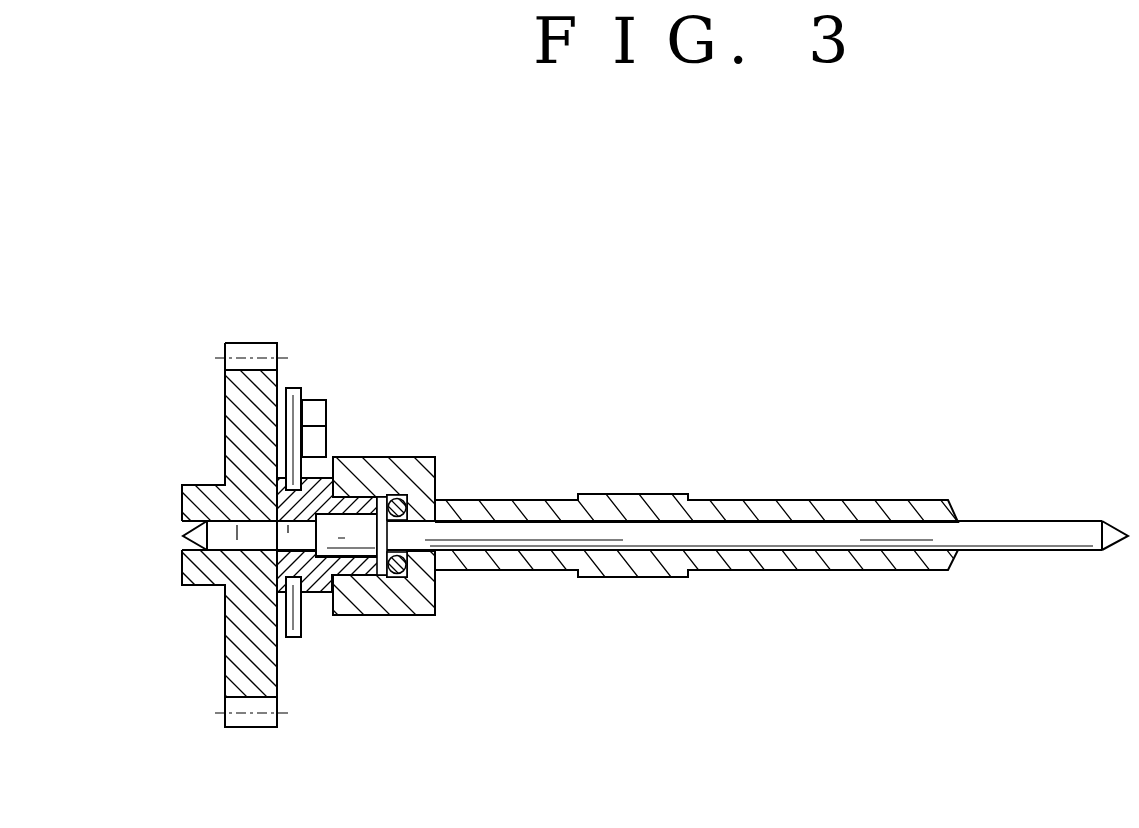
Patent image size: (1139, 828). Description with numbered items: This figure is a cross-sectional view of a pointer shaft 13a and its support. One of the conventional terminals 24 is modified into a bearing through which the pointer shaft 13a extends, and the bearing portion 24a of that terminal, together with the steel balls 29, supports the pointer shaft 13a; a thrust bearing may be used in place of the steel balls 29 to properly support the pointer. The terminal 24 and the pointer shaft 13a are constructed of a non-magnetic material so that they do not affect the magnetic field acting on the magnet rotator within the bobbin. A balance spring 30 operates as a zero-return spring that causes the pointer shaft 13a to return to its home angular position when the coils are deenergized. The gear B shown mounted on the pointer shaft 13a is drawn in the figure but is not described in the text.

The gear B is at (238, 412).
The balance spring 30 is at (293, 388).
The steel balls 29 is at (395, 500).
The bearing body 24a is at (440, 481).
The terminal 24 is at (749, 512).
The pointer shaft 13a is at (1062, 530).